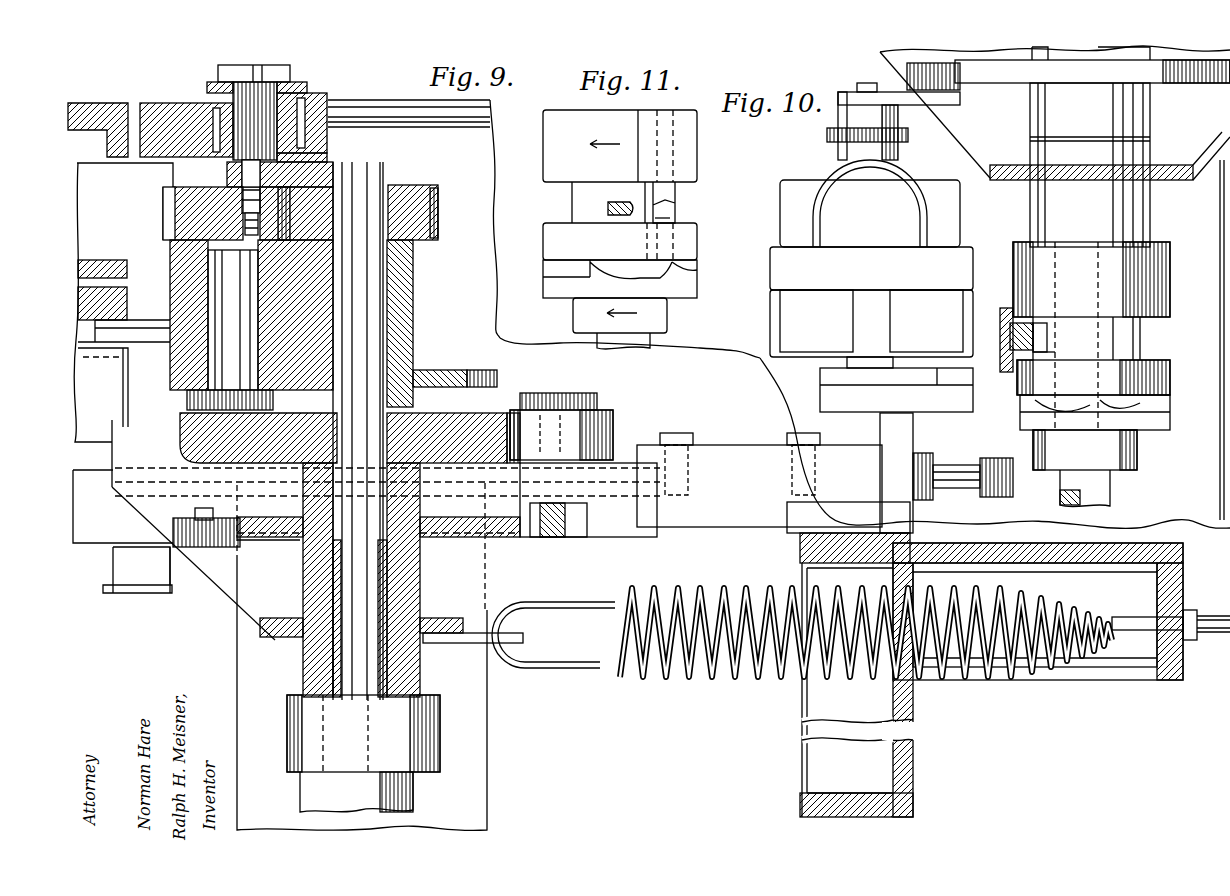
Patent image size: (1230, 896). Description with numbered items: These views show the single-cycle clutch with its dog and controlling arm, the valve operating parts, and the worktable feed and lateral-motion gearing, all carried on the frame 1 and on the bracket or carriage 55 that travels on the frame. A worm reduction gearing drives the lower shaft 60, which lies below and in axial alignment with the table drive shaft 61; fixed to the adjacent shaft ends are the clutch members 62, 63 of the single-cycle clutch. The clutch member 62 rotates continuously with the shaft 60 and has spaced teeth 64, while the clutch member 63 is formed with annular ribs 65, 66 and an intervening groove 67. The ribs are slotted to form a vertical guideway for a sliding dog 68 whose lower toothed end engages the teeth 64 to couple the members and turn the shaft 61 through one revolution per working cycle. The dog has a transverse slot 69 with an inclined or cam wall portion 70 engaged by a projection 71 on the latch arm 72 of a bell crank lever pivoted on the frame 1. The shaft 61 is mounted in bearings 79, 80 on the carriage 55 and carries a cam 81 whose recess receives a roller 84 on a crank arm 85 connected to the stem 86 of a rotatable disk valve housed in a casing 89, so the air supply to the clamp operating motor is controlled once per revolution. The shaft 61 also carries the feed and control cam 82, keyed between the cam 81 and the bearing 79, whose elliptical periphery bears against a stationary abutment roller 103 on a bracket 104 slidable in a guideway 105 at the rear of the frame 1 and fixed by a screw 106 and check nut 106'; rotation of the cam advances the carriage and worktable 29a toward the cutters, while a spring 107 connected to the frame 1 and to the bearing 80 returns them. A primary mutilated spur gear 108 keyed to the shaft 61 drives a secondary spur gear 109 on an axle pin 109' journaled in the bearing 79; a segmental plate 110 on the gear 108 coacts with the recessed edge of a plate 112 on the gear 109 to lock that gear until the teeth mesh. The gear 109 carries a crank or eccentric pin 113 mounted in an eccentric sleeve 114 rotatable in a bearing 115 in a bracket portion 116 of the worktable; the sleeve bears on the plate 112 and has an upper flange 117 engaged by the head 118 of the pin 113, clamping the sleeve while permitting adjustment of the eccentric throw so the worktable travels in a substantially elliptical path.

In FIG. 9, the frame 1 is at (462, 163).
In FIG. 9, the worktable 29a is at (120, 92).
In FIG. 9, the bracket or carriage 55 is at (557, 538).
In FIG. 10, the bracket or carriage 55 is at (1185, 520).
In FIG. 11, the shaft 60 is at (647, 342).
In FIG. 10, the shaft 60 is at (1110, 490).
In FIG. 9, the table drive shaft 61 is at (367, 320).
In FIG. 11, the clutch member 62 is at (667, 313).
In FIG. 10, the clutch member 62 is at (1137, 450).
In FIG. 9, the clutch member 63 is at (426, 794).
In FIG. 11, the clutch member 63 is at (708, 164).
In FIG. 10, the clutch member 63 is at (1163, 344).
In FIG. 11, the spaced teeth 64 is at (607, 262).
In FIG. 10, the spaced teeth 64 is at (1100, 407).
In FIG. 9, the annular rib 65 is at (430, 738).
In FIG. 11, the annular rib 65 is at (548, 125).
In FIG. 10, the annular rib 65 is at (1153, 278).
In FIG. 11, the annular rib 66 is at (548, 242).
In FIG. 10, the annular rib 66 is at (1163, 377).
In FIG. 11, the intervening groove 67 is at (553, 184).
In FIG. 11, the sliding dog 68 is at (672, 192).
In FIG. 10, the sliding dog 68 is at (1050, 332).
In FIG. 11, the transverse slot 69 is at (662, 215).
In FIG. 10, the transverse slot 69 is at (1047, 352).
In FIG. 11, the inclined or cam wall portion 70 is at (663, 205).
In FIG. 11, the projection 71 is at (608, 207).
In FIG. 10, the projection 71 is at (1030, 323).
In FIG. 10, the latch arm 72 is at (1005, 357).
In FIG. 9, the bearing 79 is at (407, 343).
In FIG. 9, the bearing 80 is at (410, 658).
In FIG. 10, the bearing 80 is at (1140, 205).
In FIG. 9, the cam 81 is at (470, 543).
In FIG. 10, the cam 81 is at (1193, 73).
In FIG. 9, the feed and control cam 82 is at (487, 417).
In FIG. 9, the roller 84 is at (173, 528).
In FIG. 10, the roller 84 is at (955, 90).
In FIG. 9, the crank arm 85 is at (206, 552).
In FIG. 10, the crank arm 85 is at (930, 103).
In FIG. 10, the stem 86 is at (868, 78).
In FIG. 11, the casing 89 is at (764, 226).
In FIG. 9, the stationary abutment roller 103 is at (590, 433).
In FIG. 9, the bracket 104 is at (620, 487).
In FIG. 9, the guideway 105 is at (720, 470).
In FIG. 9, the screw 106 is at (950, 487).
In FIG. 9, the check nut 106' is at (971, 497).
In FIG. 9, the spring 107 is at (752, 680).
In FIG. 9, the primary mutilated spur gear 108 is at (413, 210).
In FIG. 9, the secondary spur gear 109 is at (223, 213).
In FIG. 9, the axle pin 109' is at (202, 325).
In FIG. 9, the segmental plate 110 is at (310, 180).
In FIG. 9, the plate 112 is at (175, 222).
In FIG. 9, the crank or eccentric pin 113 is at (240, 170).
In FIG. 9, the eccentric sleeve 114 is at (327, 142).
In FIG. 9, the bearing 115 is at (320, 120).
In FIG. 9, the bracket portion 116 is at (320, 123).
In FIG. 9, the flange 117 is at (207, 86).
In FIG. 9, the head 118 is at (283, 68).